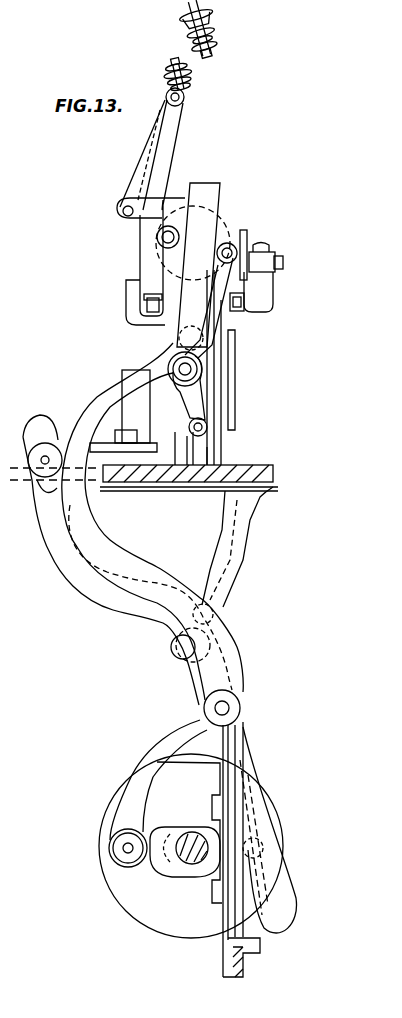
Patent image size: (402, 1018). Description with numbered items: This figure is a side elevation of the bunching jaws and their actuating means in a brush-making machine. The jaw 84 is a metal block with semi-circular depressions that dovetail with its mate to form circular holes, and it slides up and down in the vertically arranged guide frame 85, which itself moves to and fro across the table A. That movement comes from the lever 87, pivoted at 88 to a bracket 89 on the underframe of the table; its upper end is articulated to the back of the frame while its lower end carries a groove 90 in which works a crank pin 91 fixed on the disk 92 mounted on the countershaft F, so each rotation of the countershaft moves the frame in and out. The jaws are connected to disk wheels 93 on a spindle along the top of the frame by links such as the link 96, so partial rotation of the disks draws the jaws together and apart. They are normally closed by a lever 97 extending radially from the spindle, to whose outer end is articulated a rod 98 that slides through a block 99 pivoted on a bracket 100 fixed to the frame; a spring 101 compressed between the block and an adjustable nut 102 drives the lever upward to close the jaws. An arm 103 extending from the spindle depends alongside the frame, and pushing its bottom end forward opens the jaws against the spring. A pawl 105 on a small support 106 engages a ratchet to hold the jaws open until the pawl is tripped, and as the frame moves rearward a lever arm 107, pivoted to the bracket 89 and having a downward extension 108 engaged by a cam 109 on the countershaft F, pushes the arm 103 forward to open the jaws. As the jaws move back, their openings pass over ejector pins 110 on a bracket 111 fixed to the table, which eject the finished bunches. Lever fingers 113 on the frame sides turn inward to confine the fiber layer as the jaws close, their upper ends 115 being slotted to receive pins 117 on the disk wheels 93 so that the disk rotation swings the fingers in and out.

The jaw 84 is at (212, 443).
The guide frame 85 is at (213, 355).
The lever 87 is at (38, 418).
The pivot 88 is at (171, 653).
The bracket 89 is at (218, 607).
The groove 90 is at (277, 913).
The crank pin 91 is at (257, 830).
The disk 92 is at (186, 836).
The disk wheels 93 is at (234, 236).
The link 96 is at (170, 320).
The lever 97 is at (151, 208).
The rod 98 is at (155, 152).
The block 99 is at (186, 100).
The bracket 100 is at (170, 148).
The spring 101 is at (192, 72).
The adjustable nut 102 is at (218, 20).
The arm 103 is at (193, 266).
The pawl 105 is at (258, 313).
The support 106 is at (248, 300).
The lever arm 107 is at (147, 368).
The downward extension 108 is at (157, 757).
The cam 109 is at (160, 853).
The ejector pins 110 is at (150, 385).
The bracket 111 is at (132, 406).
The lever fingers 113 is at (235, 400).
The upper ends 115 is at (247, 236).
The pins 117 is at (272, 252).
The table A is at (230, 482).
The countershaft F is at (182, 853).